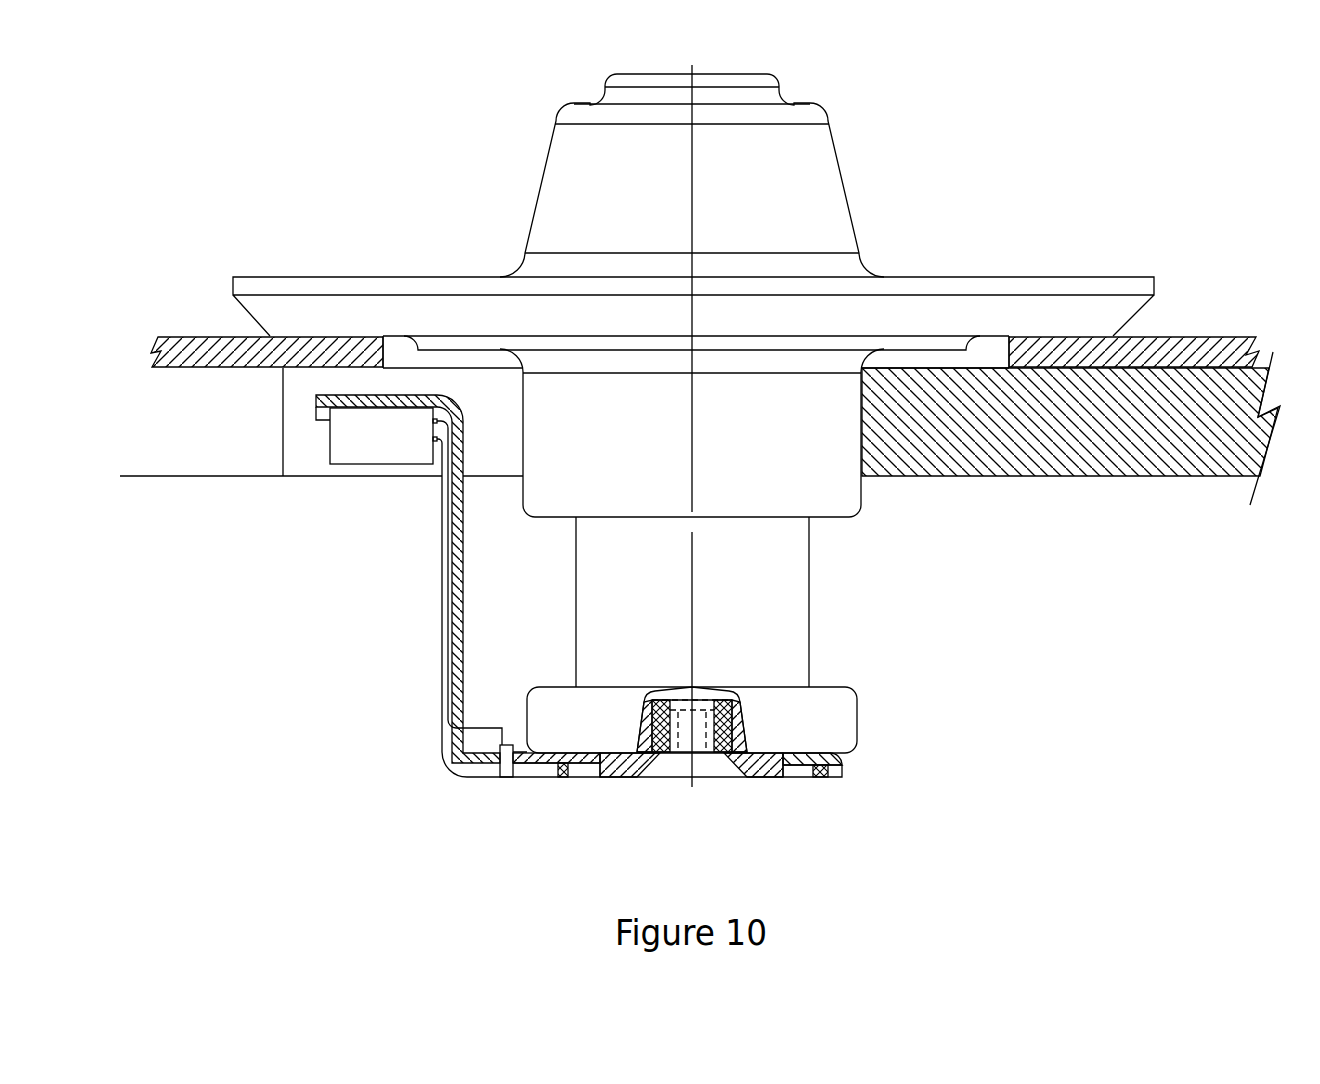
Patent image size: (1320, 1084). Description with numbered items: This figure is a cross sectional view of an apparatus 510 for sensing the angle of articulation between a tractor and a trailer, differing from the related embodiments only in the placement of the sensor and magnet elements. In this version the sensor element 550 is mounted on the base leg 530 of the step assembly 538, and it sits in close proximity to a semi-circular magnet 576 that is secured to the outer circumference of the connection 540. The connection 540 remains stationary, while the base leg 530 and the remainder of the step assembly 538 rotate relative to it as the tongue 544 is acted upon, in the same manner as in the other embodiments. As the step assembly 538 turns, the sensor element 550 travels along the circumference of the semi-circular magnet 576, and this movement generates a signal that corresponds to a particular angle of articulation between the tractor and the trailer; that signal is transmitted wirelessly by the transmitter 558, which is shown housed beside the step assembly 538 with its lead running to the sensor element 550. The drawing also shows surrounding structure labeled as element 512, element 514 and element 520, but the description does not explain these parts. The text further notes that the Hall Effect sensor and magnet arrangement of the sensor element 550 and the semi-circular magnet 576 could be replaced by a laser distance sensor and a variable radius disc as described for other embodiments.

The apparatus 510 is at (437, 270).
The housing body 512 is at (870, 521).
The mounting plate 514 is at (1057, 338).
The wall 520 is at (1192, 477).
The base leg 530 is at (528, 757).
The step assembly 538 is at (418, 772).
The connection 540 is at (772, 777).
The tongue 544 is at (323, 418).
The sensor element 550 is at (508, 757).
The transmitter 558 is at (387, 463).
The semi-circular magnet 576 is at (563, 777).